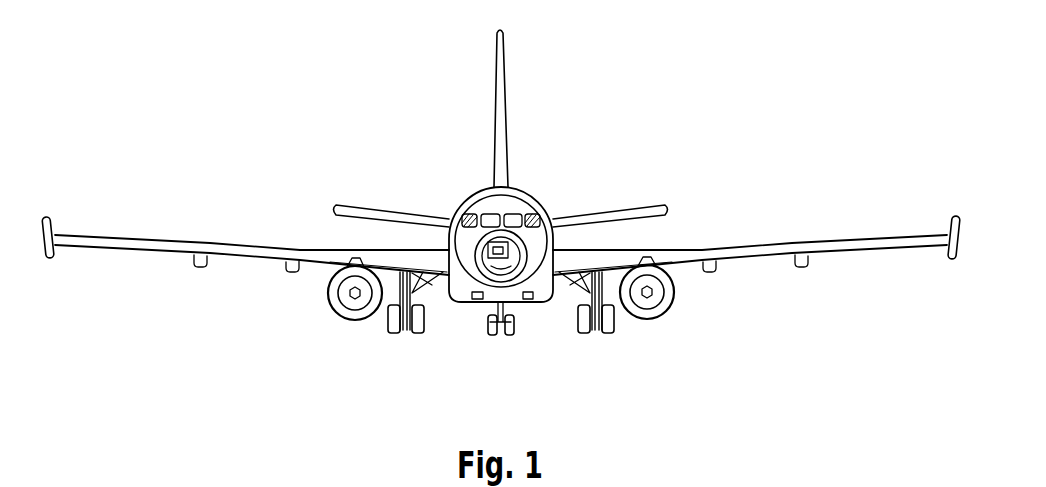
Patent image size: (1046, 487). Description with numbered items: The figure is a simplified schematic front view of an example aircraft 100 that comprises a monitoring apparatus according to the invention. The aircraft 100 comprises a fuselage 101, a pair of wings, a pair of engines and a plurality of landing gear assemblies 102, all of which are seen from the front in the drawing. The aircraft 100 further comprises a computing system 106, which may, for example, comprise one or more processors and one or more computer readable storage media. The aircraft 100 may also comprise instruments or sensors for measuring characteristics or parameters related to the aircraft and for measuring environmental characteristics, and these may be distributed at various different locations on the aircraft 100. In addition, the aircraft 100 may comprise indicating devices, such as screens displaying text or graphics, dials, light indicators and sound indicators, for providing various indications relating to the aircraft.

The aircraft 100 is at (624, 75).
The fuselage 101 is at (528, 192).
The landing gear assemblies 102 is at (562, 347).
The computing system 106 is at (490, 243).